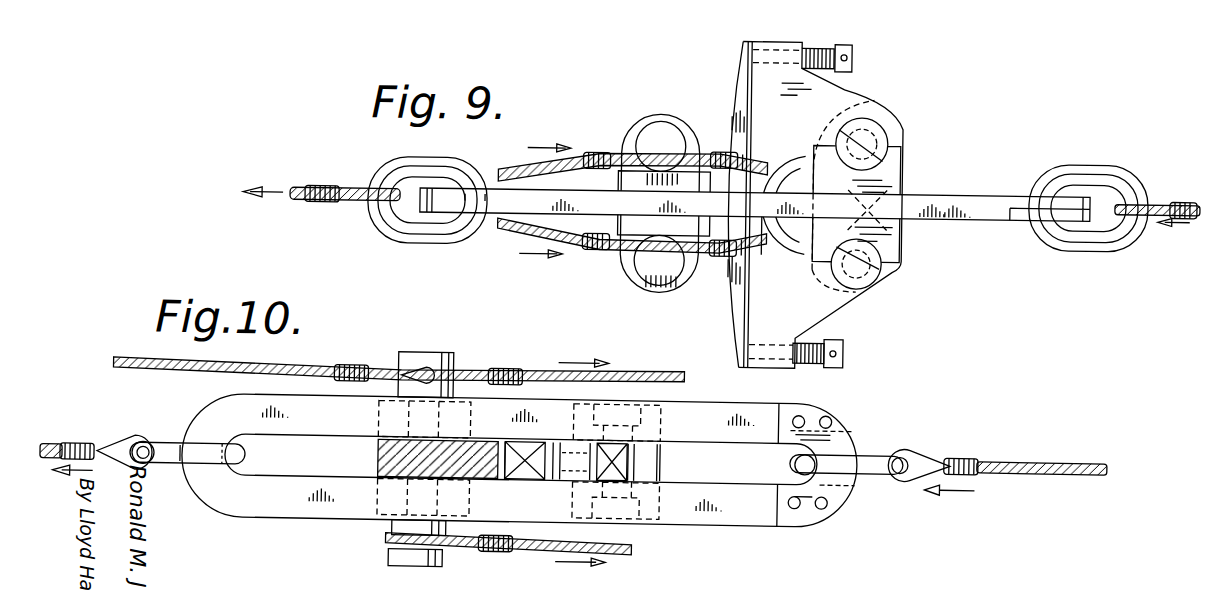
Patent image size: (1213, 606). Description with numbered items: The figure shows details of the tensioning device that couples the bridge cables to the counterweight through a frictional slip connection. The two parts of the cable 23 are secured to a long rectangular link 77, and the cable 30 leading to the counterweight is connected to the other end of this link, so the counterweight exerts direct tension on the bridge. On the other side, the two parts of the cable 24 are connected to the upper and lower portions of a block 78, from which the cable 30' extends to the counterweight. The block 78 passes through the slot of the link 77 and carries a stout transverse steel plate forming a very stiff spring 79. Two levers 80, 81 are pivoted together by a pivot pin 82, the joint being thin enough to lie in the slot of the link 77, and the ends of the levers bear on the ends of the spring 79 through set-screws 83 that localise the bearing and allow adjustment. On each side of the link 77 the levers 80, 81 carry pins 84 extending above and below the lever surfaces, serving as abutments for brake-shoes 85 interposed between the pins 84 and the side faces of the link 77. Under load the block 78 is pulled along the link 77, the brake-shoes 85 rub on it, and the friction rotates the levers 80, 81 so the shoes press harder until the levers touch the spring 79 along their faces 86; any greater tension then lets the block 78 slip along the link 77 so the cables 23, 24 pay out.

In FIG. 9, the cable 23 is at (318, 190).
In FIG. 10, the cable 23 is at (77, 441).
In FIG. 9, the cable 24 is at (800, 157).
In FIG. 10, the cable 24 is at (533, 361).
In FIG. 9, the cable 30 is at (1158, 180).
In FIG. 10, the cable 30 is at (998, 453).
In FIG. 9, the cable 30' is at (618, 201).
In FIG. 10, the cable 30' is at (395, 459).
In FIG. 9, the rectangular link 77 is at (992, 214).
In FIG. 9, the block 78 is at (625, 125).
In FIG. 10, the block 78 is at (378, 452).
In FIG. 9, the spring 79 is at (734, 88).
In FIG. 10, the spring 79 is at (197, 491).
In FIG. 9, the lever 80 is at (877, 294).
In FIG. 9, the lever 81 is at (882, 116).
In FIG. 10, the lever 81 is at (520, 472).
In FIG. 9, the pivot pin 82 is at (847, 82).
In FIG. 10, the pivot pin 82 is at (563, 471).
In FIG. 9, the set-screw 83 is at (850, 49).
In FIG. 9, the pin 84 is at (903, 113).
In FIG. 9, the brake-shoe 85 is at (903, 156).
In FIG. 10, the brake-shoe 85 is at (657, 416).
In FIG. 9, the face 86 is at (738, 68).